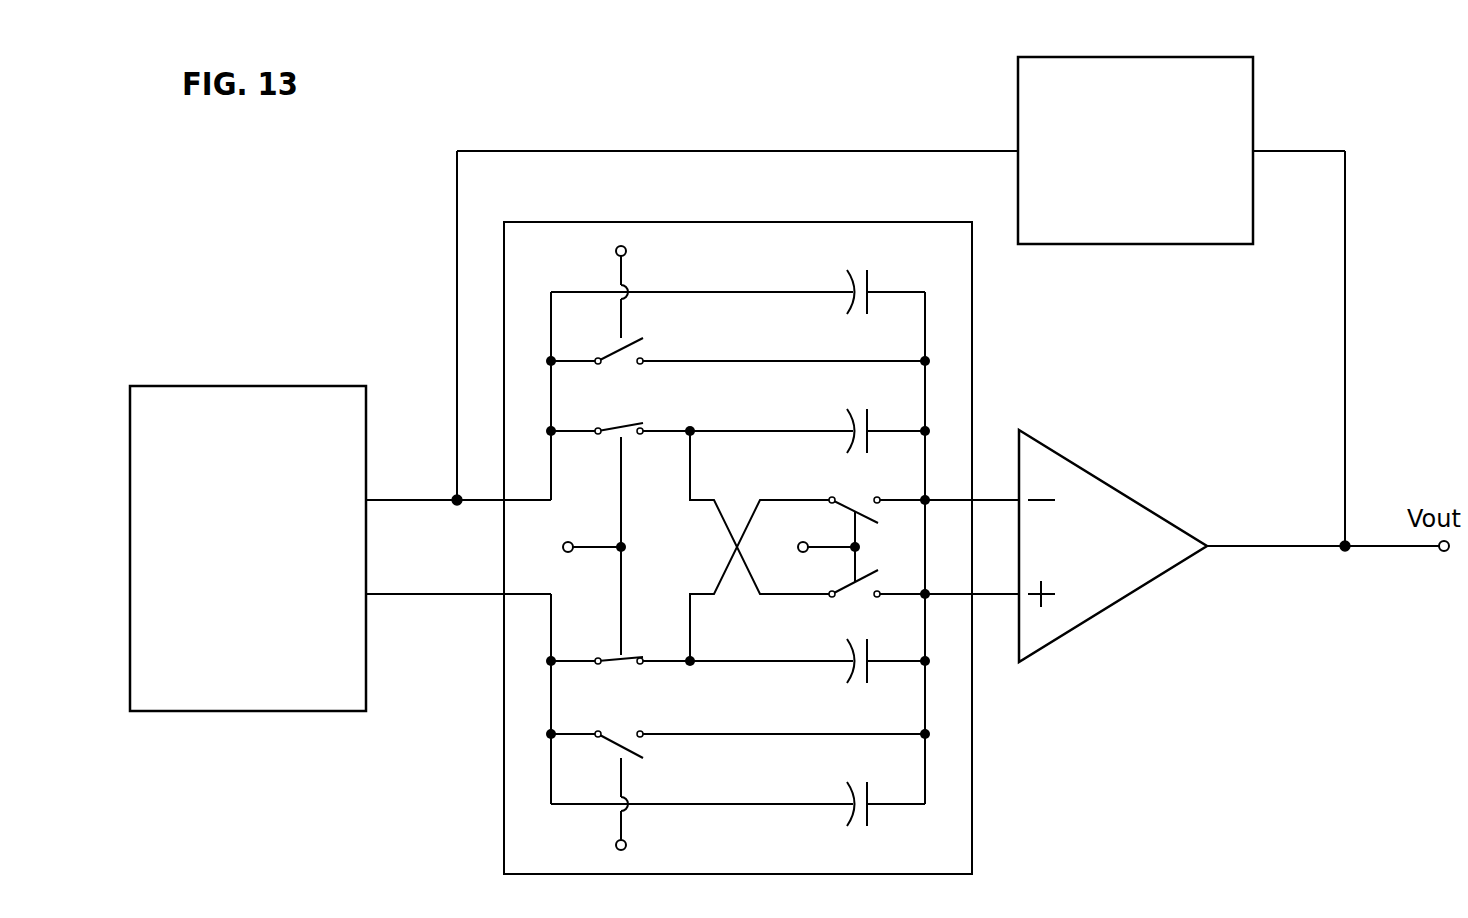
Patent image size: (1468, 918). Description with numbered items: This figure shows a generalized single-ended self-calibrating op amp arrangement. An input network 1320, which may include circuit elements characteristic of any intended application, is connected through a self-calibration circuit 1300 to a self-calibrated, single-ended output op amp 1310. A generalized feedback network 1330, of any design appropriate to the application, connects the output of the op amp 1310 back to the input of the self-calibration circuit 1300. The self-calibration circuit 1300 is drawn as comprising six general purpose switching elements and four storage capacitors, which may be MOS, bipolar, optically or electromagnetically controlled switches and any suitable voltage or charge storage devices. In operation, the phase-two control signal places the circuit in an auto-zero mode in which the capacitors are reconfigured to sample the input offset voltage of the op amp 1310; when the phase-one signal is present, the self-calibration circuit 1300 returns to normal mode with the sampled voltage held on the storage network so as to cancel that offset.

The self-calibration circuit 1300 is at (820, 548).
The op amp 1310 is at (1148, 536).
The input network 1320 is at (271, 509).
The feedback network 1330 is at (1217, 135).